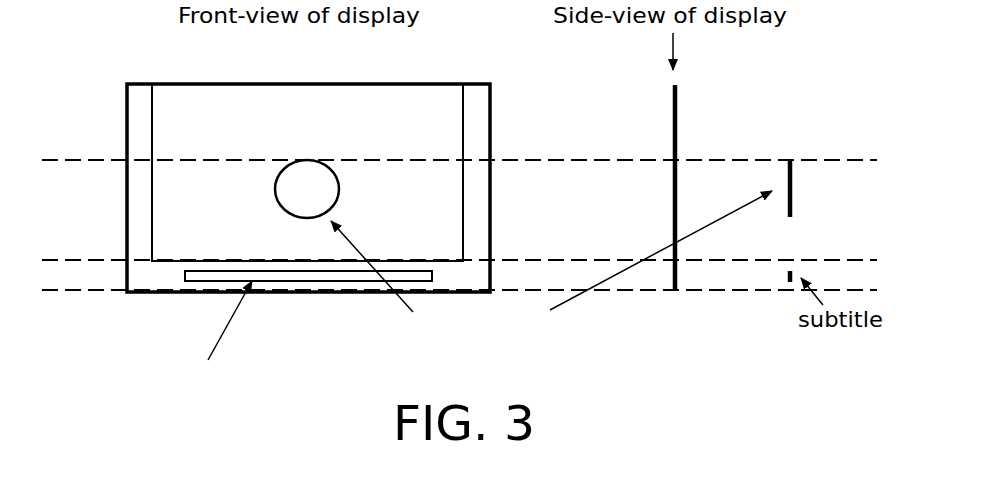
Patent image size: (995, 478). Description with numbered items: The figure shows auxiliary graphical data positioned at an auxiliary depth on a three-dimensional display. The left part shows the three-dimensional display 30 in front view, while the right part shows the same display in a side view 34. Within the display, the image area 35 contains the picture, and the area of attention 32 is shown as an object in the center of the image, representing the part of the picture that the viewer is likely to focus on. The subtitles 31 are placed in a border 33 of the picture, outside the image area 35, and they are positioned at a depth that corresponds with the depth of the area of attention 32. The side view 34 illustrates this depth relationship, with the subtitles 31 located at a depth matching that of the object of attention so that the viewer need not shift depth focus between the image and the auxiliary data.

The 3D display 30 is at (231, 95).
The subtitles 31 is at (303, 283).
The area of attention 32 is at (276, 187).
The border 33 is at (142, 198).
The side view 34 is at (675, 272).
The image area 35 is at (191, 241).